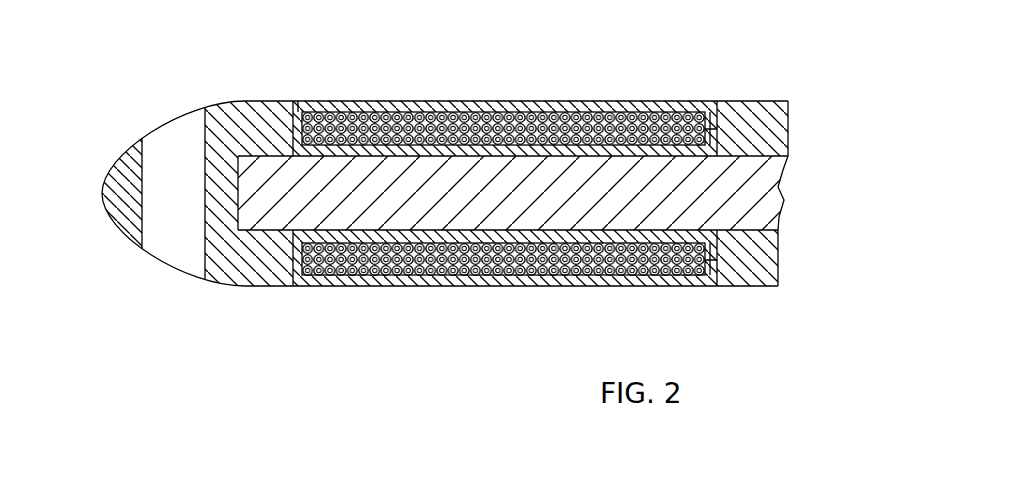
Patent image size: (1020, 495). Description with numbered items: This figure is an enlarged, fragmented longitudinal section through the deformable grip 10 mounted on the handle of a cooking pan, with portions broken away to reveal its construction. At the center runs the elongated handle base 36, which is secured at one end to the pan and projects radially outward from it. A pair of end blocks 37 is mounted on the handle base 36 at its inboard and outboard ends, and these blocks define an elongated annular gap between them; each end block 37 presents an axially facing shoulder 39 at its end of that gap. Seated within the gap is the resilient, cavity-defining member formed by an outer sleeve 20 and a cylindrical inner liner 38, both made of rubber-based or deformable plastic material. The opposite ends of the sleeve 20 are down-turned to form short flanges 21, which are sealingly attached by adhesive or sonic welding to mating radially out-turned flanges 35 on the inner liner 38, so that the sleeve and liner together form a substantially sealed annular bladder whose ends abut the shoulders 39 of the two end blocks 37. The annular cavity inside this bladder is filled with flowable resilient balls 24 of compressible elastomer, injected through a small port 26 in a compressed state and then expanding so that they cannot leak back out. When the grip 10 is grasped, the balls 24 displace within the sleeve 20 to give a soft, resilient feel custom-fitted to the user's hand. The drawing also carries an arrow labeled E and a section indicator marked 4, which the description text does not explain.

The deformable grip 10 is at (258, 382).
The outer sleeve 20 is at (612, 101).
The short flanges 21 is at (730, 101).
The resilient balls 24 is at (364, 128).
The port 26 is at (446, 101).
The radially out-turned flanges 35 is at (730, 154).
The handle base 36 is at (258, 197).
The end blocks 37 is at (117, 155).
The inner liner 38 is at (540, 162).
The axially facing shoulders 39 is at (297, 107).
The emission direction E is at (680, 107).
The section line 4- 4 is at (548, 58).